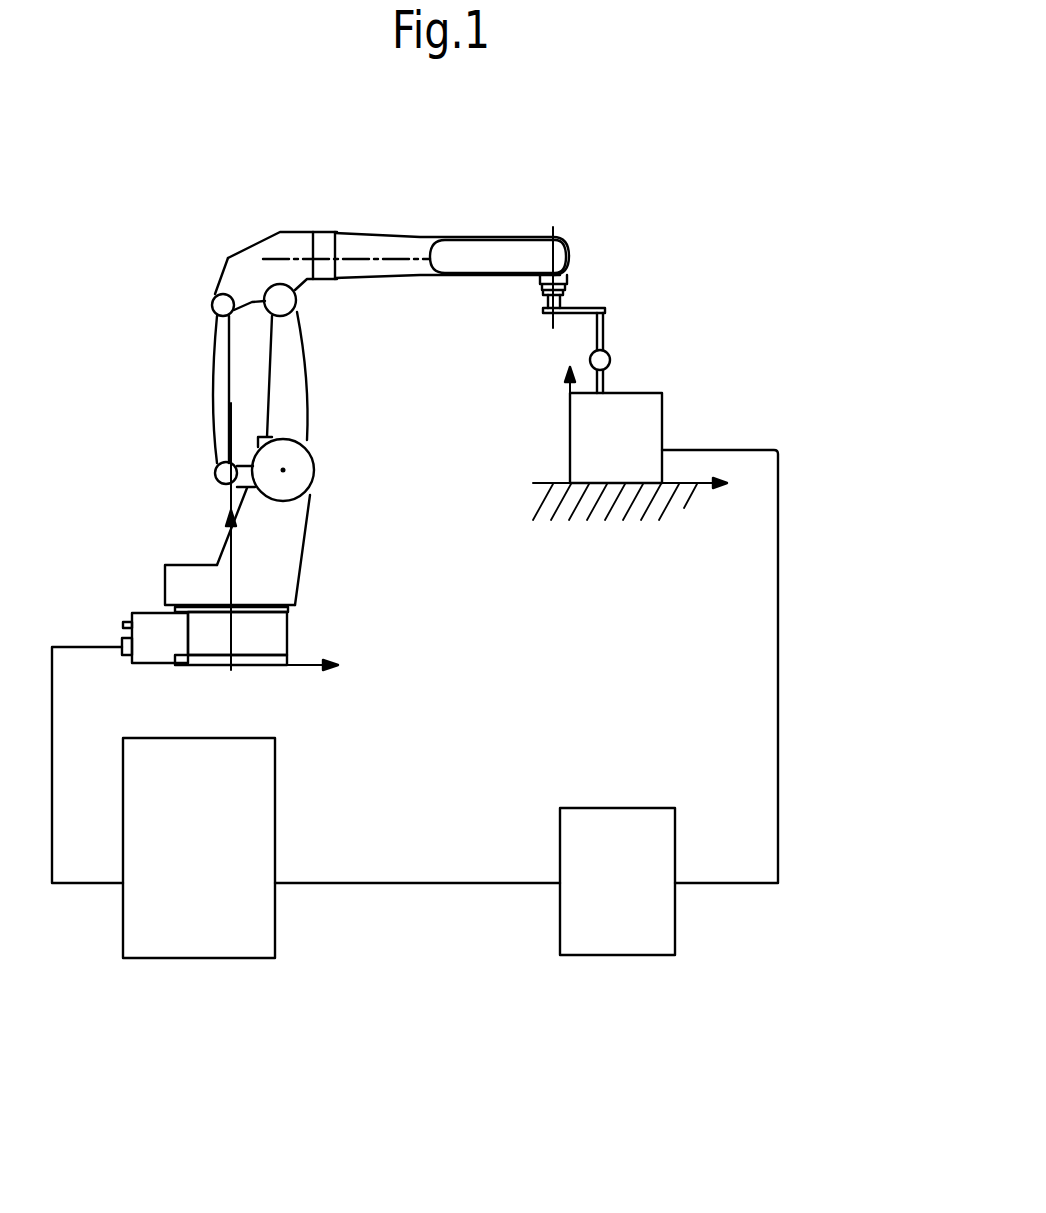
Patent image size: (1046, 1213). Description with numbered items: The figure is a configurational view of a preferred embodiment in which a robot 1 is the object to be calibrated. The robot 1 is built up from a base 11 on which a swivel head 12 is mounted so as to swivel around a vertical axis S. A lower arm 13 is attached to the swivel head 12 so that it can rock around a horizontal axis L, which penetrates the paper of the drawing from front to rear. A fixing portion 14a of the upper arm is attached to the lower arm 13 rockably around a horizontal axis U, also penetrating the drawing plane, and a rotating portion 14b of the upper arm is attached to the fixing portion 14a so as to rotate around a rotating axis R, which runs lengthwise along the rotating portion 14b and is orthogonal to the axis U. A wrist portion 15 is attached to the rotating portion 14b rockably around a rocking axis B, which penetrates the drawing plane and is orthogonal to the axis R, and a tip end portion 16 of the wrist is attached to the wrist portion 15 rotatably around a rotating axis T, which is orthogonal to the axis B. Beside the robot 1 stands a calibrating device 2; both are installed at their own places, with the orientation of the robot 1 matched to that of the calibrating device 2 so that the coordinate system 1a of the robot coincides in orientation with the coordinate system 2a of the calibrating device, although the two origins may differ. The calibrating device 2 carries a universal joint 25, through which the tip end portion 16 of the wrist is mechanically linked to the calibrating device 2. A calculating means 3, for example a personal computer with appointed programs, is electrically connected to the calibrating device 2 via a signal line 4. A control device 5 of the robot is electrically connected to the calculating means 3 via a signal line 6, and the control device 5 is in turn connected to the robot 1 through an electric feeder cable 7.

The robot 1 is at (347, 233).
The coordinate system of the robot 1a is at (232, 587).
The calibrating device 2 is at (635, 417).
The coordinate system of the calibrating device 2a is at (690, 483).
The calculating means 3 is at (620, 935).
The signal line 4 is at (778, 685).
The control device 5 is at (183, 932).
The signal line 6 is at (367, 883).
The electric feeder cable 7 is at (80, 884).
The base 11 is at (248, 635).
The swivel head 12 is at (197, 582).
The lower arm 13 is at (283, 365).
The fixing portion of the upper arm 14a is at (242, 280).
The rotating portion of the upper arm 14b is at (393, 247).
The wrist portion 15 is at (565, 276).
The tip end portion of the wrist 16 is at (543, 287).
The universal joint 25 is at (598, 366).
The rotating axis R is at (295, 260).
The rocking axis B is at (553, 259).
The rotating axis T is at (548, 303).
The horizontal axis U is at (281, 300).
The vertical axis S is at (227, 437).
The horizontal axis L is at (287, 472).